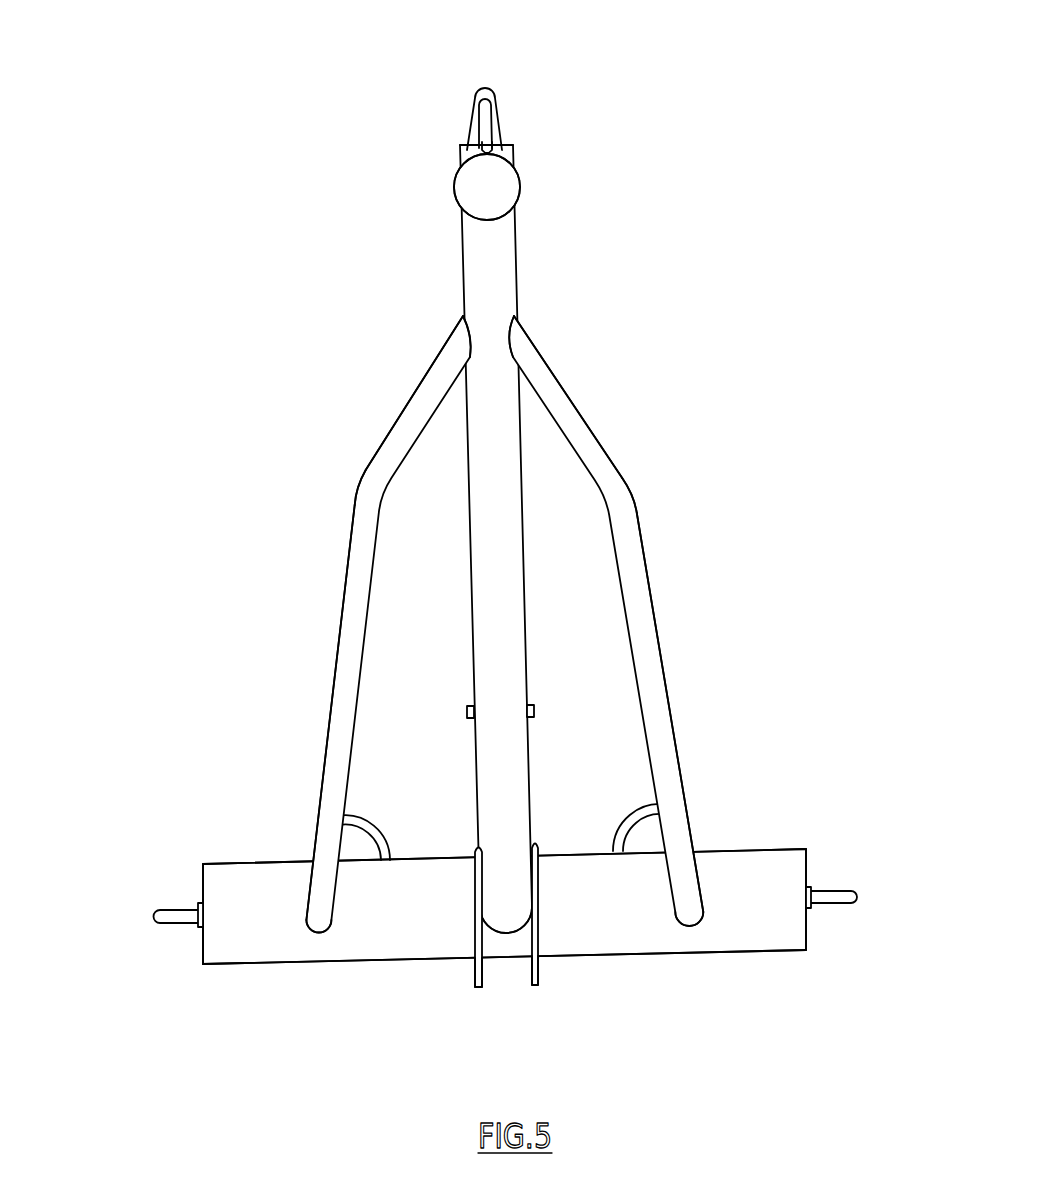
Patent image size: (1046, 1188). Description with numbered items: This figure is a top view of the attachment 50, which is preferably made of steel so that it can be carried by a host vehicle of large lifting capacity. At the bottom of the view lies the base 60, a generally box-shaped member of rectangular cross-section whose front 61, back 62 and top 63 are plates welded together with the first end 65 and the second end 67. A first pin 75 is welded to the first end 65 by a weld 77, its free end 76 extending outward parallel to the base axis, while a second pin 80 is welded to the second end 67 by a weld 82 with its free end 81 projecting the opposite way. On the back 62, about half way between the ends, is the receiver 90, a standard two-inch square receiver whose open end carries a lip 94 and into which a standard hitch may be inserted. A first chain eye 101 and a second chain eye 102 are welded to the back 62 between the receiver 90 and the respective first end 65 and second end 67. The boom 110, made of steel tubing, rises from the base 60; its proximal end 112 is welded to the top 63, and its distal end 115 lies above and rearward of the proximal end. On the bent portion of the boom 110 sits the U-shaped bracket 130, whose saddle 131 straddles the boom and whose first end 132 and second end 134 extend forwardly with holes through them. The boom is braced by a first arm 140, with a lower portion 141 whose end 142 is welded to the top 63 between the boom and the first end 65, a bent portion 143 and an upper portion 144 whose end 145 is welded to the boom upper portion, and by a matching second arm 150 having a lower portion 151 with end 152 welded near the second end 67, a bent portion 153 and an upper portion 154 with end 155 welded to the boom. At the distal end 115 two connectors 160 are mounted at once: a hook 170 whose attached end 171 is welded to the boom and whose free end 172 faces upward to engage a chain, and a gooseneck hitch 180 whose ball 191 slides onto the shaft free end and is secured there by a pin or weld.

The attachment 50 is at (188, 504).
The base 60 is at (262, 983).
The front 61 is at (318, 965).
The back 62 is at (232, 863).
The top 63 is at (217, 937).
The first end 65 is at (808, 932).
The second end 67 is at (203, 952).
The first pin 75 is at (873, 843).
The free end 76 is at (857, 897).
The weld 77 is at (812, 878).
The second pin 80 is at (136, 878).
The free end 81 is at (155, 917).
The weld 82 is at (198, 902).
The receiver 90 is at (549, 710).
The lip 94 is at (467, 713).
The first chain eye 101 is at (633, 807).
The second chain eye 102 is at (372, 815).
The boom 110 is at (540, 578).
The end 112 is at (505, 933).
The end 115 is at (510, 142).
The U-shaped bracket 130 is at (580, 917).
The saddle 131 is at (440, 926).
The first end 132 is at (538, 937).
The second end 134 is at (472, 938).
The first arm 140 is at (647, 637).
The lower portion 141 is at (674, 731).
The end 142 is at (702, 918).
The bent portion 143 is at (623, 479).
The upper portion 144 is at (580, 390).
The end 145 is at (517, 316).
The second arm 150 is at (338, 639).
The lower portion 151 is at (326, 745).
The end 152 is at (327, 932).
The bent portion 153 is at (355, 487).
The upper portion 154 is at (430, 365).
The end 155 is at (463, 315).
The connector 160 is at (474, 187).
The hook 170 is at (466, 79).
The attached end 171 is at (477, 143).
The free end 172 is at (508, 137).
The gooseneck hitch 180 is at (437, 199).
The ball 191 is at (462, 187).